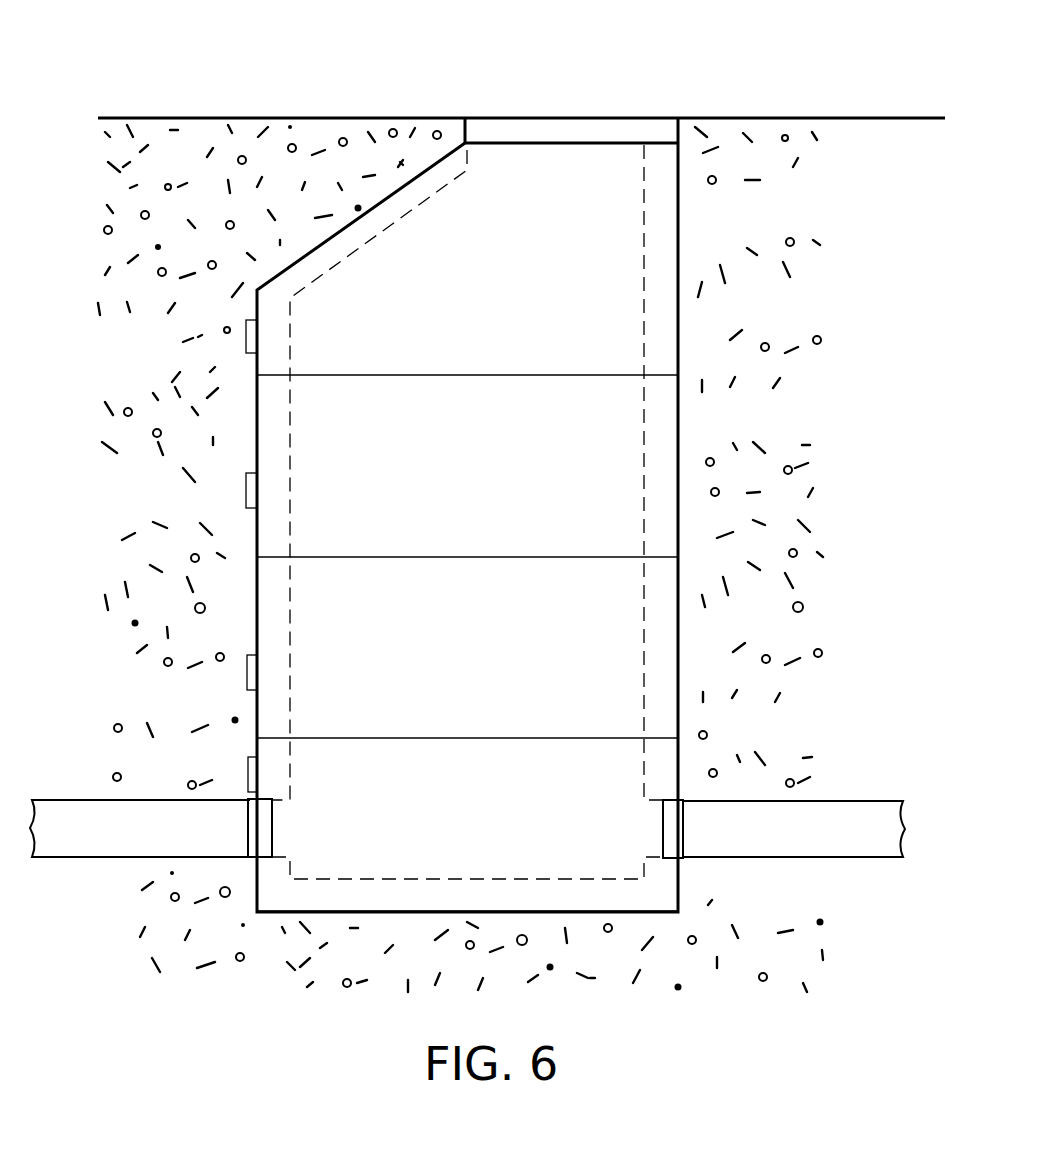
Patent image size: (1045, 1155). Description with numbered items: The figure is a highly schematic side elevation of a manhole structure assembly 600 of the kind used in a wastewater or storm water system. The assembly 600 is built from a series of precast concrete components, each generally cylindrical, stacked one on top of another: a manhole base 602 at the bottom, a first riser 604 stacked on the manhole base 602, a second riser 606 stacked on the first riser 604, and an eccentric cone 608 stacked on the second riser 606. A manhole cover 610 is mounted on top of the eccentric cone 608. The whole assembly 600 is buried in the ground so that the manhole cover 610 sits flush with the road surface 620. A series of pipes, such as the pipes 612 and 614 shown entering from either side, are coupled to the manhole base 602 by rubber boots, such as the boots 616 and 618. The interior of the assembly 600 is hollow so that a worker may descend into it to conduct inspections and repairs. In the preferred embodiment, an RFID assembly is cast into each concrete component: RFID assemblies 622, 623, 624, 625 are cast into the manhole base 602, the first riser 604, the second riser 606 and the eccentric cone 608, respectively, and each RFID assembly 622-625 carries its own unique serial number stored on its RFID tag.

The manhole structure assembly 600 is at (742, 211).
The manhole base 602 is at (557, 674).
The first riser 604 is at (561, 804).
The second riser 606 is at (554, 475).
The eccentric cone 608 is at (560, 330).
The manhole cover 610 is at (690, 127).
The pipe 612 is at (100, 858).
The pipe 614 is at (826, 800).
The rubber boot 616 is at (313, 828).
The rubber boot 618 is at (611, 829).
The road surface 620 is at (521, 74).
The RFID assembly 622 is at (157, 766).
The RFID assembly 623 is at (161, 677).
The RFID assembly 624 is at (169, 490).
The RFID assembly 625 is at (169, 346).